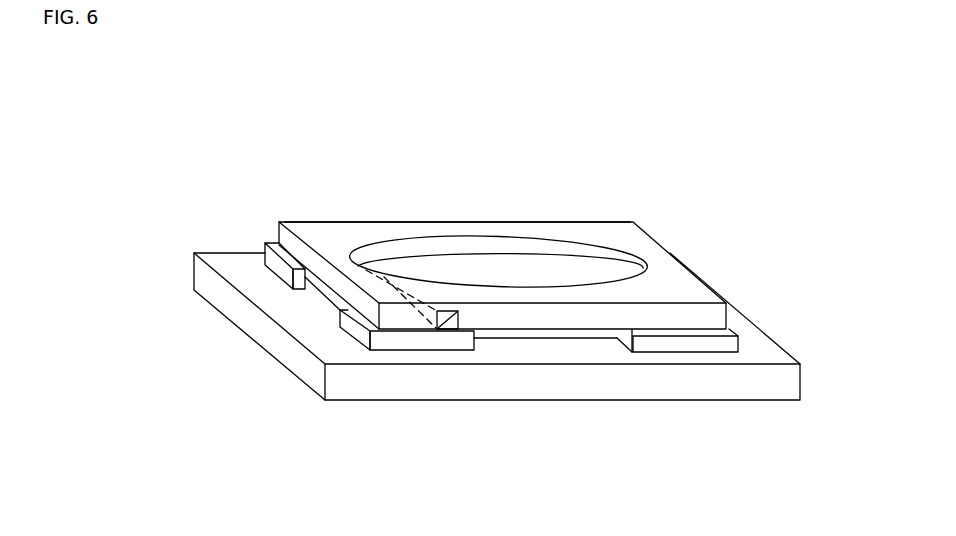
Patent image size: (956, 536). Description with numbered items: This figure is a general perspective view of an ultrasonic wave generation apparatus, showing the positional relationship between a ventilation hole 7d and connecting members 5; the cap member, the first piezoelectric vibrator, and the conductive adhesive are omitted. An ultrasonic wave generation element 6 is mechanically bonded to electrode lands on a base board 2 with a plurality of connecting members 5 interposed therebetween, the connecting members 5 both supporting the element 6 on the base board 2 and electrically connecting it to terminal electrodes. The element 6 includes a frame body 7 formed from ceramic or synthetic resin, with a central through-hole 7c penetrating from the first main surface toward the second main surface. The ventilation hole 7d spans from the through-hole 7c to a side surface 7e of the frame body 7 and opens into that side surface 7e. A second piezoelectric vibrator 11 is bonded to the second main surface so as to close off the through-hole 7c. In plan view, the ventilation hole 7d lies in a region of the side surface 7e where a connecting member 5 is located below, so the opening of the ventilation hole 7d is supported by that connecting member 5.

The base board 2 is at (357, 403).
The connecting member 5 is at (412, 345).
The ultrasonic wave generation element 6 is at (495, 218).
The frame body 7 is at (373, 237).
The through-hole 7c is at (560, 255).
The ventilation hole 7d is at (460, 314).
The side surface 7e is at (580, 325).
The second piezoelectric vibrator 11 is at (525, 343).